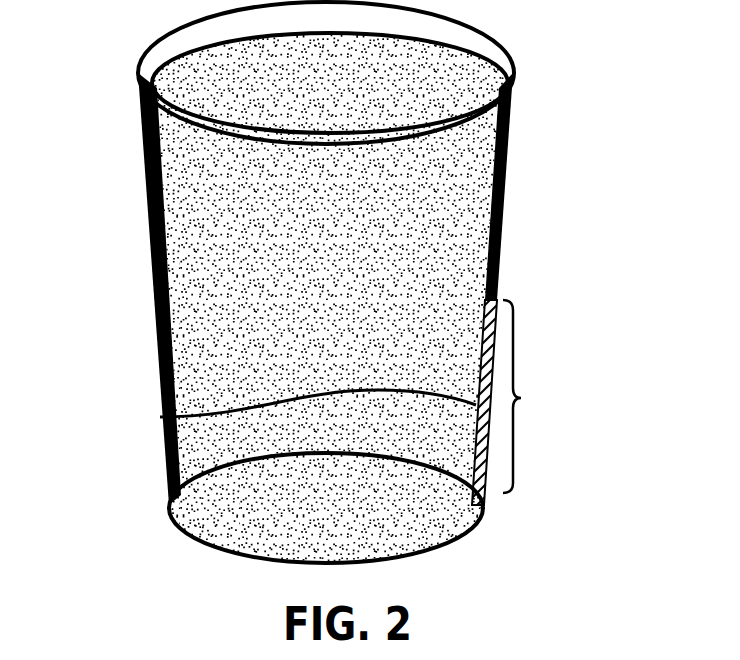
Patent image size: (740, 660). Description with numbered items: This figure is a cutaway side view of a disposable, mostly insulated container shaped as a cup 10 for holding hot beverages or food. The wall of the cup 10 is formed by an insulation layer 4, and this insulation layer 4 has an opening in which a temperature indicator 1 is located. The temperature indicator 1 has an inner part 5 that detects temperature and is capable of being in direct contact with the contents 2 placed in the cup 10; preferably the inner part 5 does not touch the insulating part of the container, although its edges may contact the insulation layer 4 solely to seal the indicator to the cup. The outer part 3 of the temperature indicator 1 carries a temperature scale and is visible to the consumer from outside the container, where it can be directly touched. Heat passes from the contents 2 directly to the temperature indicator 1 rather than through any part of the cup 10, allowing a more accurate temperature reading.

The cup 10 is at (369, 291).
The temperature indicator 1 is at (521, 398).
The contents 2 is at (415, 253).
The outer part of the temperature indicator 3 is at (490, 427).
The insulation layer 4 is at (153, 248).
The inner part of the temperature indicator 5 is at (160, 417).